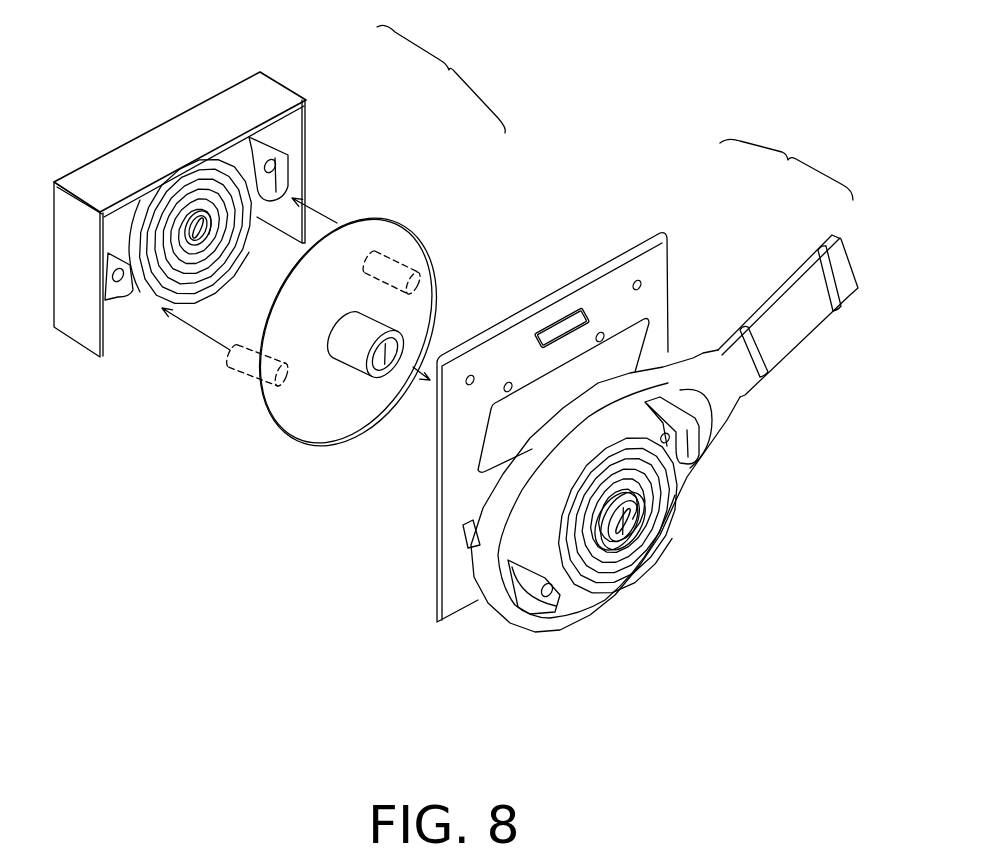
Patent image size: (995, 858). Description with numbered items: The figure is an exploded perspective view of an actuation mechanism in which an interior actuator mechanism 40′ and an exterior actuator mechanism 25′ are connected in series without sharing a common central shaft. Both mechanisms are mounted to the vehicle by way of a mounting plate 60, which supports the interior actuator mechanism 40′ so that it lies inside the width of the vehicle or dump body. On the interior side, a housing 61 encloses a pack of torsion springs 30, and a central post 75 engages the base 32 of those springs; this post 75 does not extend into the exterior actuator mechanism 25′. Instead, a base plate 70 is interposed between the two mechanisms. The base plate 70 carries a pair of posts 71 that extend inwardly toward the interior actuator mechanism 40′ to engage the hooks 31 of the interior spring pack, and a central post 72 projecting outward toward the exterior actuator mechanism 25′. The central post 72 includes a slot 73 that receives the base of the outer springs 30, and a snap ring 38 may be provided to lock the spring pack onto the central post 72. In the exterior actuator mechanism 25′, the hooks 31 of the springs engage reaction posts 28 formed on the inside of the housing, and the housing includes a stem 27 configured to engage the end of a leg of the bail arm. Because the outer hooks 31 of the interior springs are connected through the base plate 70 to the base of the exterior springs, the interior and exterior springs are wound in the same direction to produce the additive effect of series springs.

The exterior actuator mechanism 25′ is at (786, 161).
The interior actuator mechanism 40′ is at (441, 79).
The stem 27 is at (740, 394).
The reaction post 28 is at (688, 353).
The springs 30 is at (155, 198).
The hooks 31 is at (288, 167).
The base portion 32 is at (203, 228).
The snap ring 38 is at (612, 553).
The mounting plate 60 is at (622, 248).
The cover housing 61 is at (290, 92).
The base plate 70 is at (417, 236).
The posts 71 is at (417, 262).
The central post 72 is at (352, 358).
The slot 73 is at (393, 367).
The central post 75 is at (198, 222).